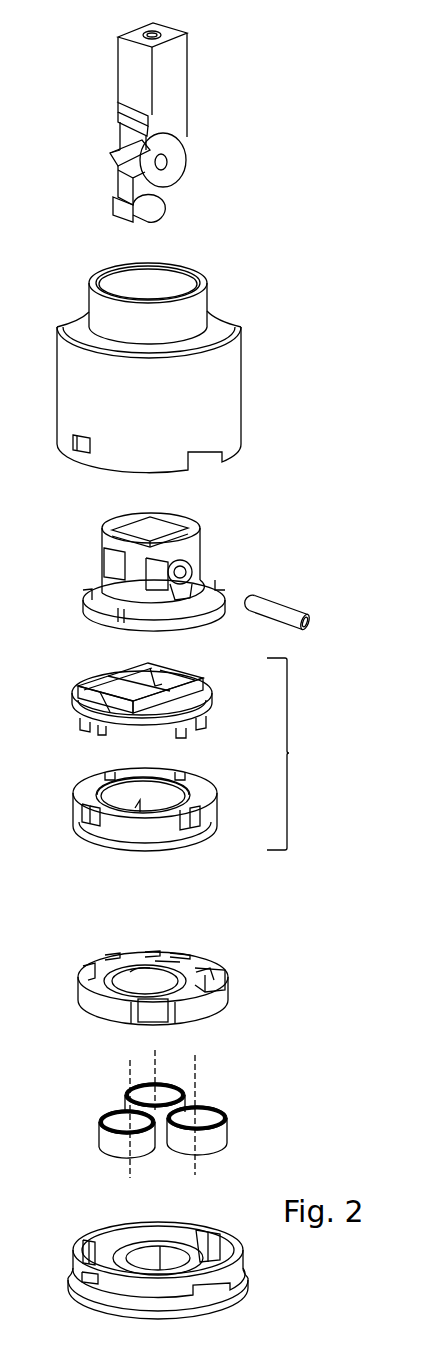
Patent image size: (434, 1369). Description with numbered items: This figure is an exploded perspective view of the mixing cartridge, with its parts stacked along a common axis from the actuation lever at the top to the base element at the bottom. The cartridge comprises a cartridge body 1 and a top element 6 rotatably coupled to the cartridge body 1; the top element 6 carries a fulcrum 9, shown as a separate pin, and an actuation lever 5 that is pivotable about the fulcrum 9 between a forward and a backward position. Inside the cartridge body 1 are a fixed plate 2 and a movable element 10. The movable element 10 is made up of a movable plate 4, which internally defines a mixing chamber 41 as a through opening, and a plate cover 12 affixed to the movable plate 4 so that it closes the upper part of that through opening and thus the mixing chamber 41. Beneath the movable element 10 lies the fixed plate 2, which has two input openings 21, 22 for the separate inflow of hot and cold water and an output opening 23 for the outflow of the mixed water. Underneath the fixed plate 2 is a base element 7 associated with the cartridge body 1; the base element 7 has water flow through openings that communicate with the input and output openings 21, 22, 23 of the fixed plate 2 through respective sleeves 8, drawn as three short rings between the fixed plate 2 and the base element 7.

The cartridge body 1 is at (240, 383).
The fixed plate 2 is at (90, 1005).
The movable plate 4 is at (217, 812).
The actuation lever 5 is at (178, 75).
The top element 6 is at (197, 557).
The base element 7 is at (230, 1275).
The sleeves 8 is at (240, 1098).
The fulcrum 9 is at (273, 605).
The movable element 10 is at (289, 753).
The plate cover 12 is at (213, 705).
The input opening 21 is at (207, 968).
The input opening 22 is at (168, 958).
The output opening 23 is at (148, 968).
The mixing chamber 41 is at (143, 790).